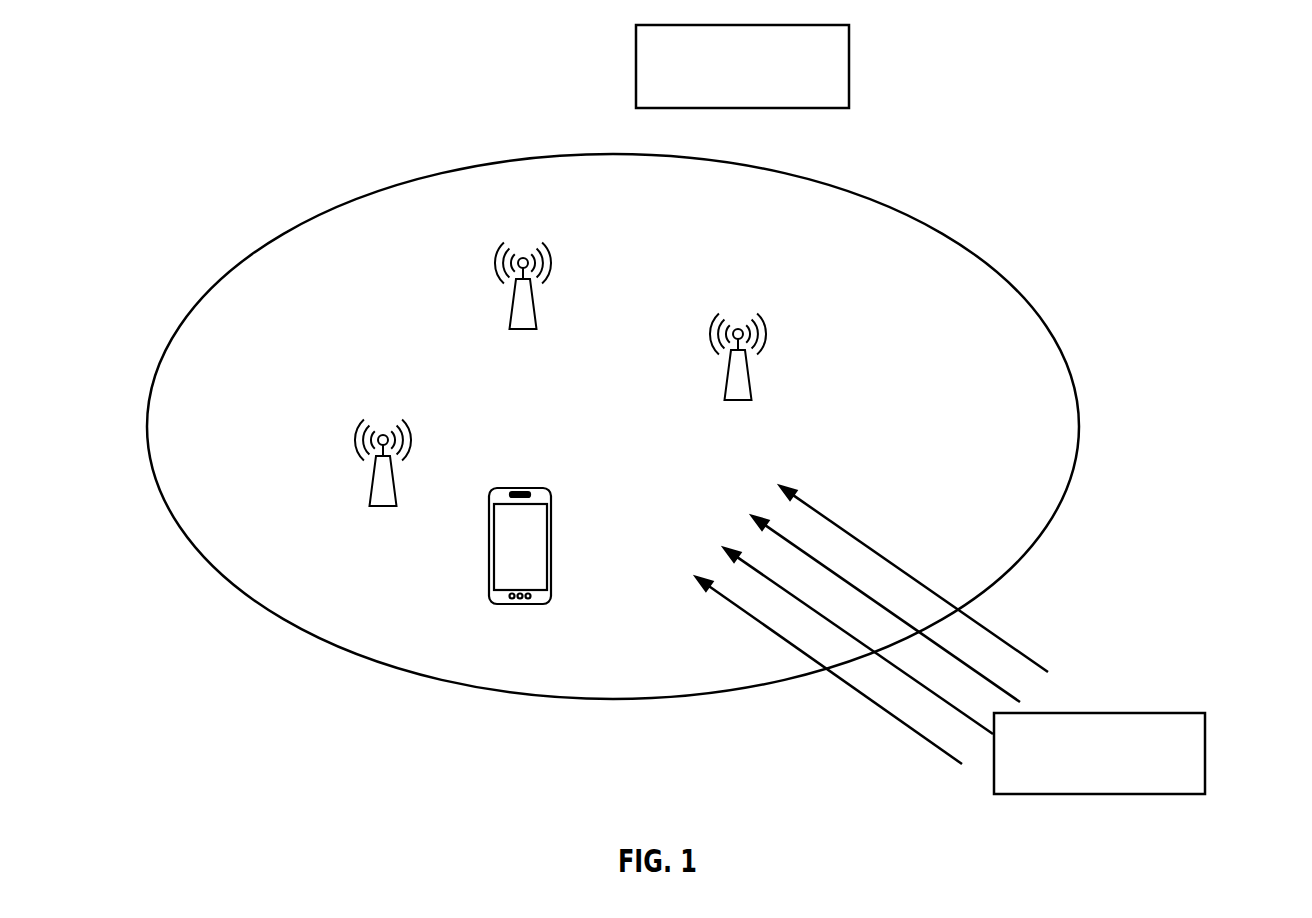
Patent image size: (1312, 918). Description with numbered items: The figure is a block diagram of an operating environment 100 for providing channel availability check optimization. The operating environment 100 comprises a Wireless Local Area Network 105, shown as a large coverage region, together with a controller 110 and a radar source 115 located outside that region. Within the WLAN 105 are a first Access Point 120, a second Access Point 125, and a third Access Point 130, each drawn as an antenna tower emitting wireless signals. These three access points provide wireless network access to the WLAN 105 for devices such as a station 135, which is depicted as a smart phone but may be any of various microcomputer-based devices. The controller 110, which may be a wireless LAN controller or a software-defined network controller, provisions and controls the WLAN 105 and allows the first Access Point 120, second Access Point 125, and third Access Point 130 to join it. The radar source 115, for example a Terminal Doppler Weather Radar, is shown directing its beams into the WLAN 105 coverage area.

The operating environment 100 is at (284, 93).
The Wireless Local Area Network 105 is at (955, 238).
The controller 110 is at (849, 67).
The radar source 115 is at (1205, 752).
The first Access Point 120 is at (743, 390).
The second Access Point 125 is at (525, 318).
The third Access Point 130 is at (382, 492).
The station 135 is at (548, 487).